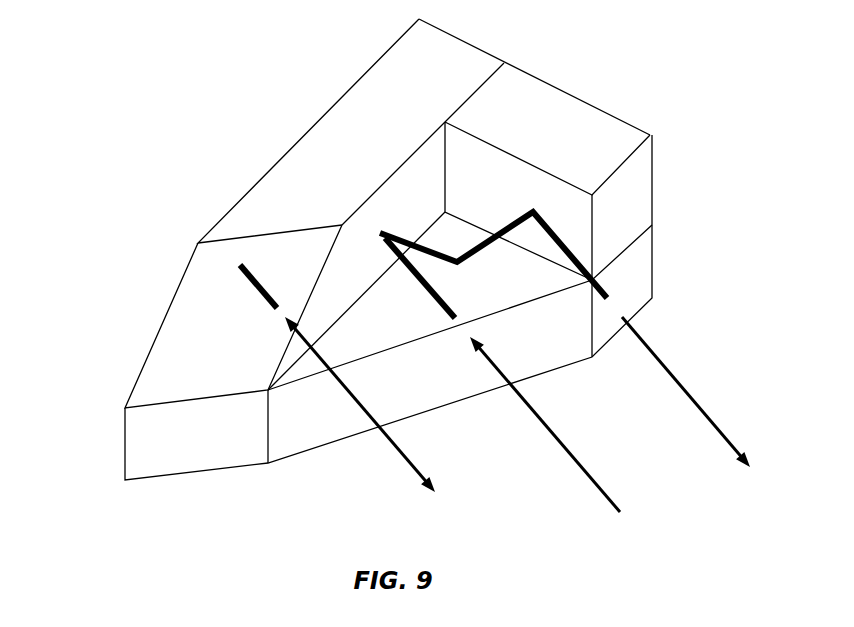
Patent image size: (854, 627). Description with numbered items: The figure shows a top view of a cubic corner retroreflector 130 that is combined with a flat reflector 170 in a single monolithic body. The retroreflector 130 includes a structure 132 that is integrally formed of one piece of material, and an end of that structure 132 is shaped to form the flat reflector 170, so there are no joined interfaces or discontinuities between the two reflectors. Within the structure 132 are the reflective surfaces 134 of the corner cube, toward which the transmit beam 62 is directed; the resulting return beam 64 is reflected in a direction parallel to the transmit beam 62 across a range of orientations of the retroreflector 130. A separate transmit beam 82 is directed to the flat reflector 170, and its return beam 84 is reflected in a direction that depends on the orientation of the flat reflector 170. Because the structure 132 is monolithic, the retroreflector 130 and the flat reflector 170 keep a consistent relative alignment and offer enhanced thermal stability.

The retroreflector 130 is at (108, 155).
The structure 132 is at (325, 155).
The reflective surfaces 134 is at (457, 233).
The flat reflector 170 is at (193, 333).
The transmit beam 82 is at (360, 406).
The return beam 84 is at (398, 458).
The transmit beam 62 is at (560, 470).
The return beam 64 is at (677, 377).